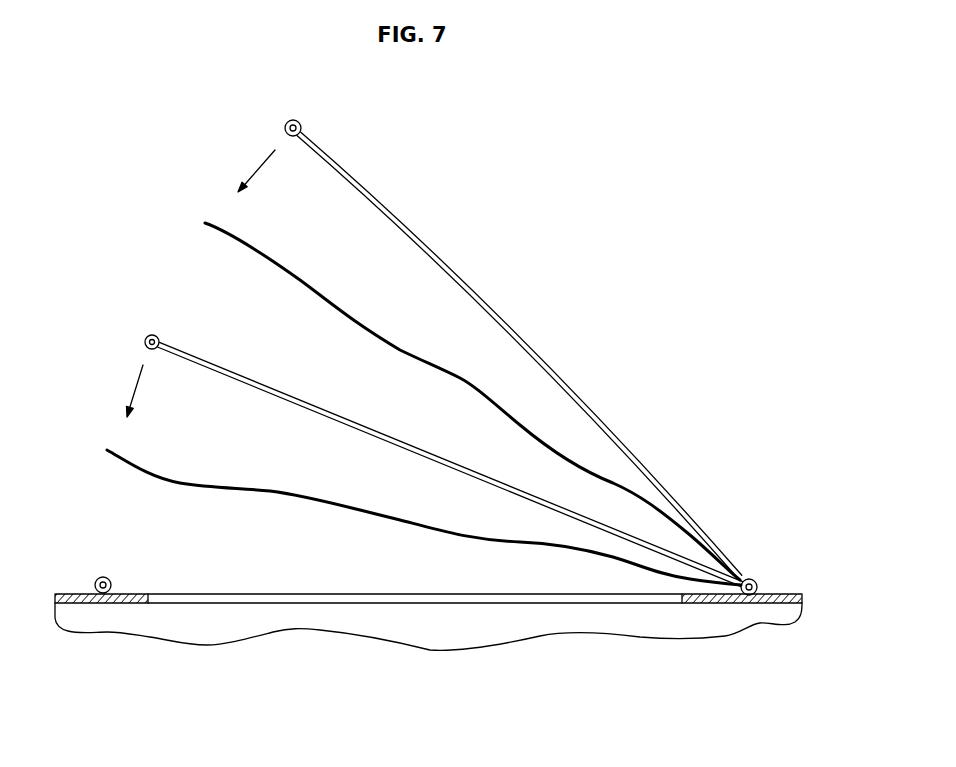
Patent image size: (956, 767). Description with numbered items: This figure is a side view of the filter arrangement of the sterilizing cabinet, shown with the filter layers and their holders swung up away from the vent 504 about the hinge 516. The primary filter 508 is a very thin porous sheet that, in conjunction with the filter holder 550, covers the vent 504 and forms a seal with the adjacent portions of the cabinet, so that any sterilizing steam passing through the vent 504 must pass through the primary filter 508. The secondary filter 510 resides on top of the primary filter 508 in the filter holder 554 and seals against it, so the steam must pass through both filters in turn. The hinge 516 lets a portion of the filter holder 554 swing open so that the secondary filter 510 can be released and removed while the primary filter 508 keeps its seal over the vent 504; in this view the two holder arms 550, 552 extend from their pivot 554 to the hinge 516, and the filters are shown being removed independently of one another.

The vent 504 is at (188, 600).
The primary filter 508 is at (137, 470).
The secondary filter 510 is at (238, 236).
The hinge 516 is at (763, 578).
The filter holder 550 is at (262, 390).
The second arm 552 is at (428, 252).
The filter holder 554 is at (285, 125).